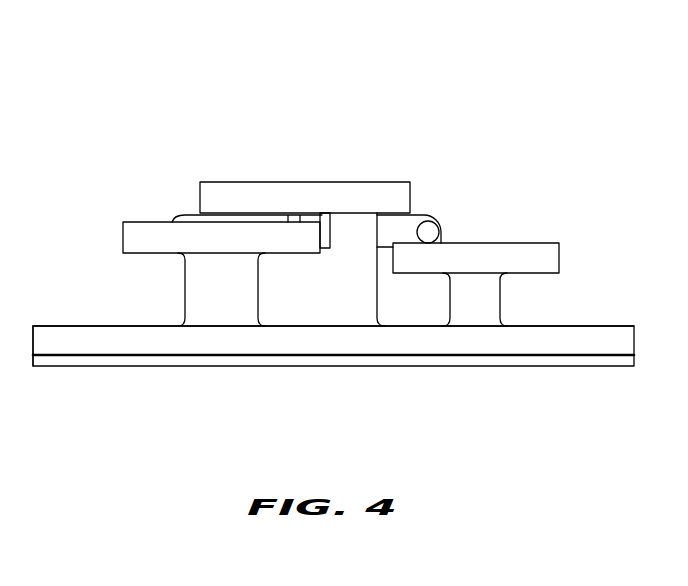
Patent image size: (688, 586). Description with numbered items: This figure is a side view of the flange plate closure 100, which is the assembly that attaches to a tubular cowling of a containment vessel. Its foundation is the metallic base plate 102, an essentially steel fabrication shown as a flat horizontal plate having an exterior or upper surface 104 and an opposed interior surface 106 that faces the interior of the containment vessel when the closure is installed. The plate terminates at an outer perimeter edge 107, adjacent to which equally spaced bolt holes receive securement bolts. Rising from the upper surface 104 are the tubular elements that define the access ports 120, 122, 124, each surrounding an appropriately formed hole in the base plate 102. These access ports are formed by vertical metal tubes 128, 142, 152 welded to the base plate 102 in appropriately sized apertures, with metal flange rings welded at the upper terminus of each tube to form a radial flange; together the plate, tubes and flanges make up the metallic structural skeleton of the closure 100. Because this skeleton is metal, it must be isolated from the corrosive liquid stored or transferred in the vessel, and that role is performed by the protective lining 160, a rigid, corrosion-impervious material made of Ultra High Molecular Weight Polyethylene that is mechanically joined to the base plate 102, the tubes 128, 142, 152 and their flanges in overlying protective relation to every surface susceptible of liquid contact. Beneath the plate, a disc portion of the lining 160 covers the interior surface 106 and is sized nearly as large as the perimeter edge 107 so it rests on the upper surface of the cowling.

The flange plate closure 100 is at (448, 94).
The base plate 102 is at (617, 345).
The upper surface 104 is at (575, 326).
The interior surface 106 is at (608, 358).
The perimeter edge 107 is at (32, 338).
The access port 120 is at (372, 165).
The access port 122 is at (132, 206).
The access port 124 is at (527, 236).
The vertical metal tube 128 is at (362, 305).
The vertical metal tube 142 is at (197, 298).
The vertical metal tube 152 is at (500, 314).
The protective lining 160 is at (311, 183).